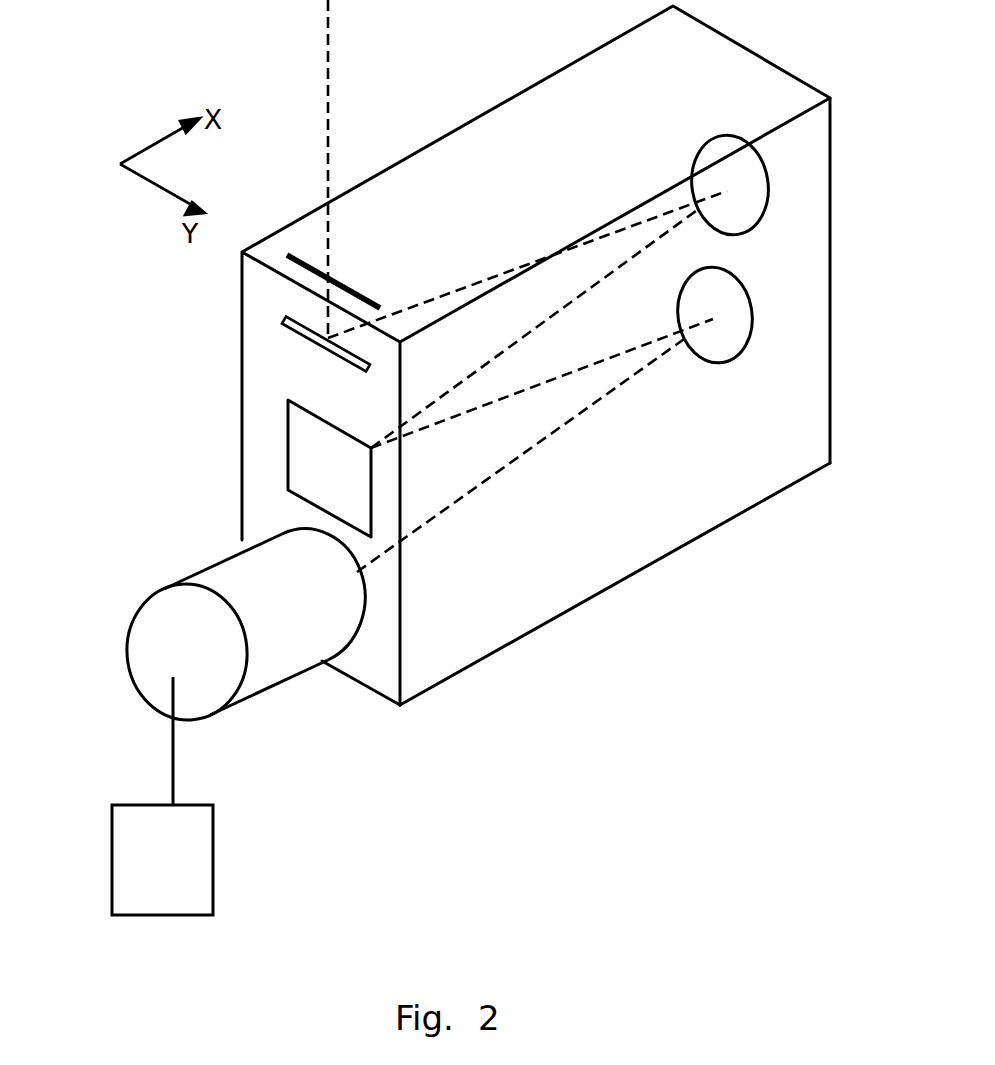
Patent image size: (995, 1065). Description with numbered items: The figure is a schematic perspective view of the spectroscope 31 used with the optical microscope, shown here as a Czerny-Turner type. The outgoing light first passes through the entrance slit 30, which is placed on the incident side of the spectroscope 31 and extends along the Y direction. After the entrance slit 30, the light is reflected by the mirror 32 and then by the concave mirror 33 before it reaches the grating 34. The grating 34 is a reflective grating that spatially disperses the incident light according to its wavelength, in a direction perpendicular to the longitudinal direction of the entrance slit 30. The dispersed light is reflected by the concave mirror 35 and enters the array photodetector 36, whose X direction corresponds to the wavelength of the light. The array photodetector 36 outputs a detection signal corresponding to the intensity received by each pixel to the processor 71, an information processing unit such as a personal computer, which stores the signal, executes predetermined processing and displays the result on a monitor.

The entrance slit 30 is at (288, 255).
The spectroscope 31 is at (752, 50).
The mirror 32 is at (282, 320).
The concave mirror 33 is at (740, 168).
The grating 34 is at (288, 433).
The concave mirror 35 is at (728, 298).
The array photodetector 36 is at (143, 620).
The processor 71 is at (112, 828).